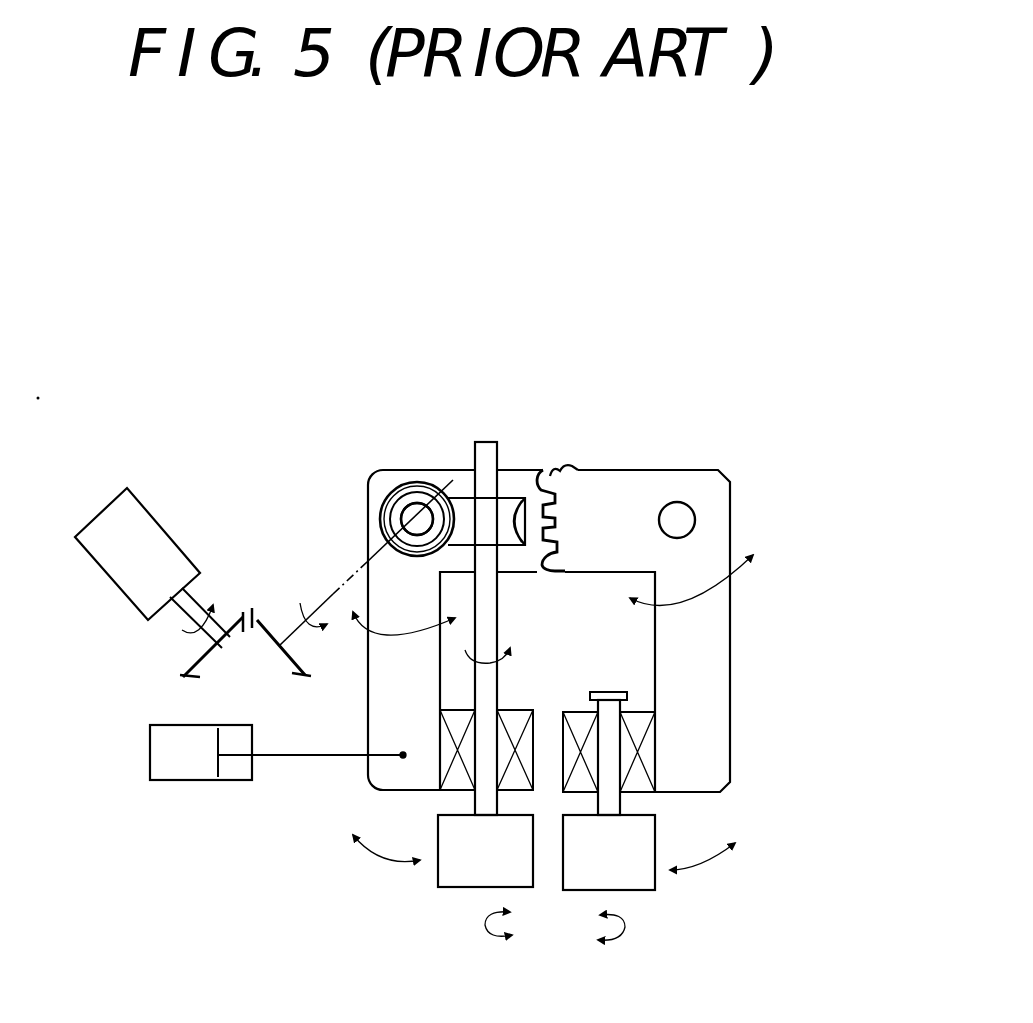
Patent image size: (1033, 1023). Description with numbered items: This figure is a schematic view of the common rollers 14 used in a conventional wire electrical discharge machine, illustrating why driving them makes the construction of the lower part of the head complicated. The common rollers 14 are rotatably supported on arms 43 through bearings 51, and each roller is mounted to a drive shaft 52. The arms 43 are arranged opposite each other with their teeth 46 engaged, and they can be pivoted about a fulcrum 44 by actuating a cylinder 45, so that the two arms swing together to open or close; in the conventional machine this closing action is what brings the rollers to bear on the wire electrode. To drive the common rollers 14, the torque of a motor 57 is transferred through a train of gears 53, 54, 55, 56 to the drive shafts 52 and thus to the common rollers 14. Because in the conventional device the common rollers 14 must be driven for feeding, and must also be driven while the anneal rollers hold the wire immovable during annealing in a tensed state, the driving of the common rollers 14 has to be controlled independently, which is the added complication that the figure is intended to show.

The common rollers 14 is at (480, 882).
The arms 43 is at (400, 695).
The fulcrum 44 is at (415, 507).
The cylinder 45 is at (178, 775).
The teeth 46 is at (553, 503).
The bearings 51 is at (508, 778).
The drive shafts 52 is at (497, 610).
The gear 53 is at (503, 507).
The gear 54 is at (405, 480).
The gear 55 is at (272, 626).
The gear 56 is at (243, 620).
The motor 57 is at (142, 522).